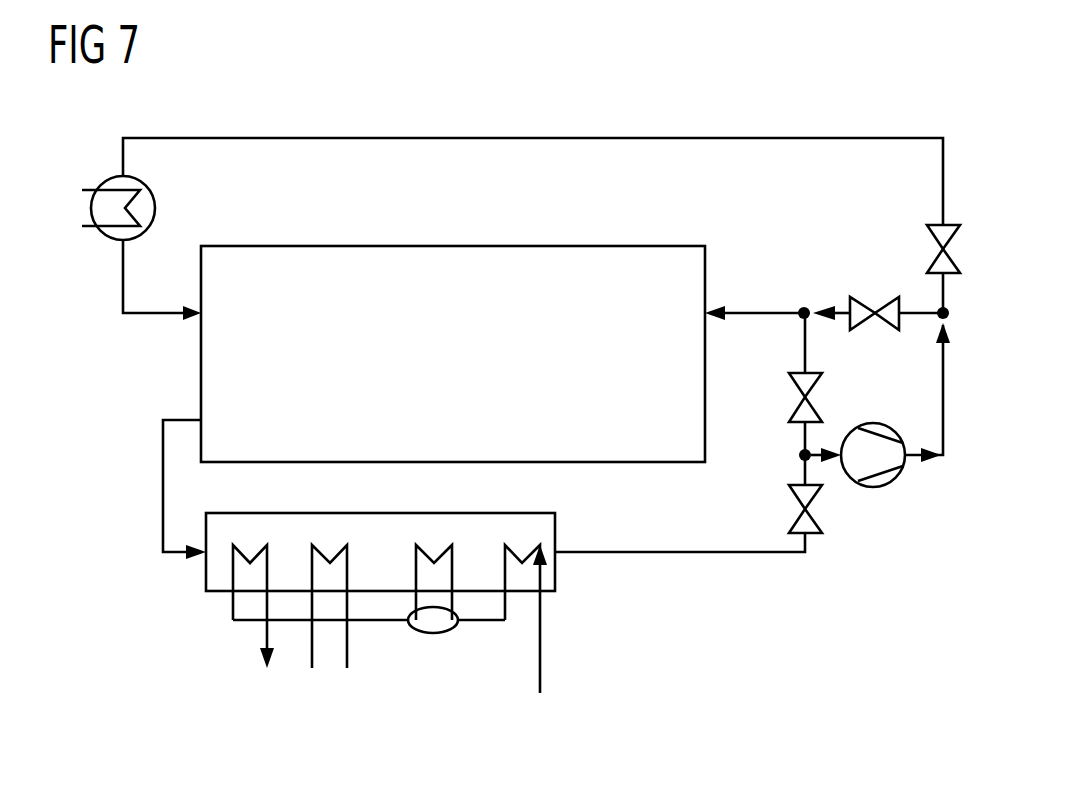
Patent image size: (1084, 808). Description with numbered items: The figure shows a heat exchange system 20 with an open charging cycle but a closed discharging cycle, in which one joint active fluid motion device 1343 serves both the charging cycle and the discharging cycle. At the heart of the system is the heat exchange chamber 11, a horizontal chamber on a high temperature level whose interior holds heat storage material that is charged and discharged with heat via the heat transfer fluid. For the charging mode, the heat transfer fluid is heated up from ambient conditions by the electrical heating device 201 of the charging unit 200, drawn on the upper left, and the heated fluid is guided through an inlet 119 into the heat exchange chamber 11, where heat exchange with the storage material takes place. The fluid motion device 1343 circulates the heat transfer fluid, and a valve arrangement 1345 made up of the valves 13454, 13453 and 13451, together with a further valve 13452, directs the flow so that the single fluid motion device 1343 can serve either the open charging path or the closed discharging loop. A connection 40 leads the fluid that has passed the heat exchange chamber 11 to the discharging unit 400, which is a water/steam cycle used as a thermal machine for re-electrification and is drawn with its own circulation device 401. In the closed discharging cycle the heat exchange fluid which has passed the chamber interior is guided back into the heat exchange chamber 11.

The cooling circuit 20 is at (885, 103).
The charging unit 200 is at (185, 208).
The electrical heating device 201 is at (157, 207).
The heat exchange chamber 11 is at (520, 246).
The inlet 119 is at (722, 292).
The valve arrangement 1345 is at (847, 309).
The valve 13454 is at (930, 240).
The valve 13453 is at (867, 295).
The valve 13451 is at (818, 410).
The valve 13452 is at (795, 503).
The pump 1343 is at (892, 482).
The connection line 40 is at (128, 490).
The discharging unit 400 is at (300, 619).
The pump 401 is at (412, 658).